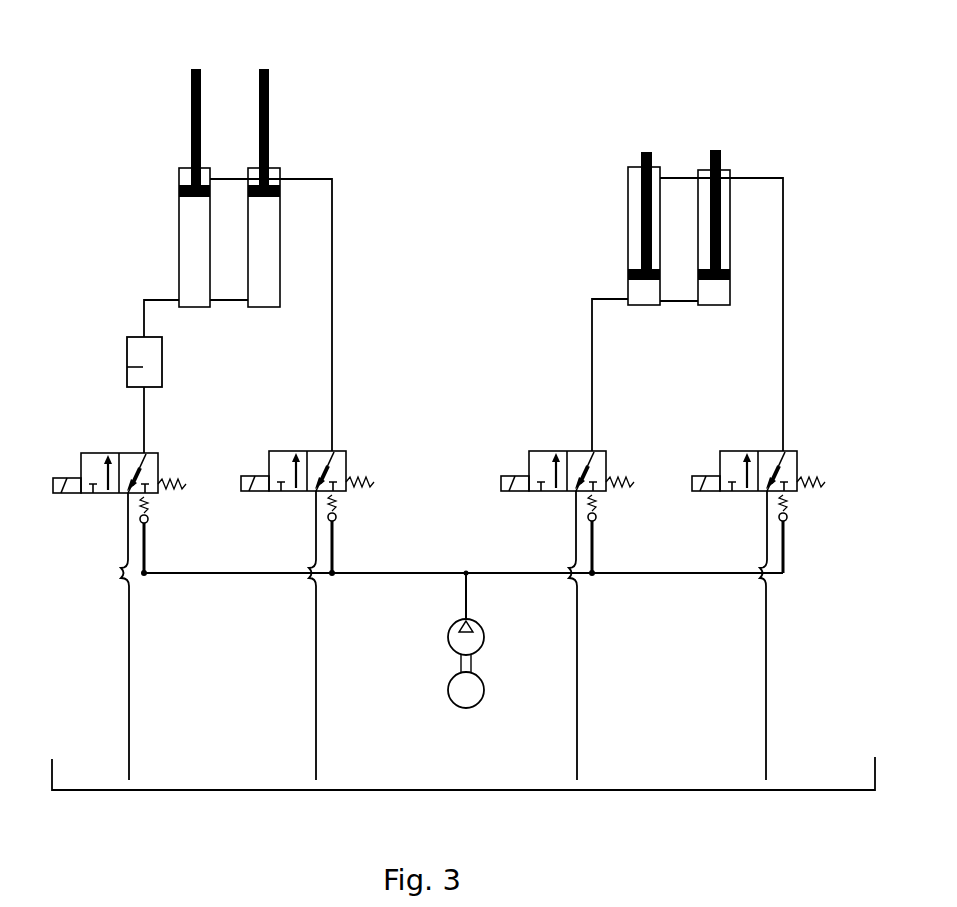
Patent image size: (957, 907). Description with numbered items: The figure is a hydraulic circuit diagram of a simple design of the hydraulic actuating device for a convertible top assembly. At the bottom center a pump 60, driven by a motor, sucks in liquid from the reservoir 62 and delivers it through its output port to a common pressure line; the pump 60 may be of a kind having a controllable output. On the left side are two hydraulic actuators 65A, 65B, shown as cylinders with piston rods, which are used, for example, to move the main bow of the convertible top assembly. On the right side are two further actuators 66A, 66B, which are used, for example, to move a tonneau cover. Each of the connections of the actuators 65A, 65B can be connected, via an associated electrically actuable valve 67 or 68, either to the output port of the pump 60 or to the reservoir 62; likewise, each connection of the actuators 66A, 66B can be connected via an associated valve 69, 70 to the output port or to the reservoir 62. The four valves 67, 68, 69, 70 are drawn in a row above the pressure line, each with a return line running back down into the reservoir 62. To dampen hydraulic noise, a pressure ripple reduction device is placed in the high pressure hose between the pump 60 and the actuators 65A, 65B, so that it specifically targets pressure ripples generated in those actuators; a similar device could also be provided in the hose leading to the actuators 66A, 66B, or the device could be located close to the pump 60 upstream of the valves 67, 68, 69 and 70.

The pump 60 is at (458, 640).
The reservoir 62 is at (77, 773).
The hydraulic actuator 65A is at (267, 232).
The hydraulic actuator 65B is at (190, 237).
The actuator 66A is at (727, 210).
The actuator 66B is at (635, 252).
The electrically actuable valve 67 is at (338, 467).
The electrically actuable valve 68 is at (148, 465).
The valve 69 is at (788, 465).
The valve 70 is at (600, 465).